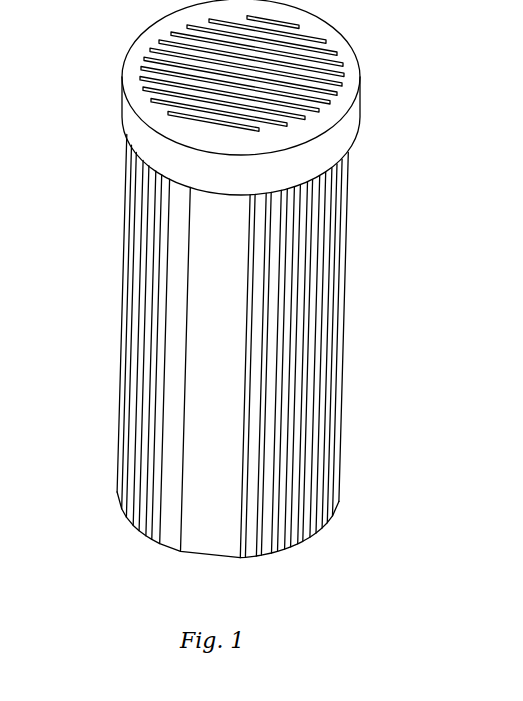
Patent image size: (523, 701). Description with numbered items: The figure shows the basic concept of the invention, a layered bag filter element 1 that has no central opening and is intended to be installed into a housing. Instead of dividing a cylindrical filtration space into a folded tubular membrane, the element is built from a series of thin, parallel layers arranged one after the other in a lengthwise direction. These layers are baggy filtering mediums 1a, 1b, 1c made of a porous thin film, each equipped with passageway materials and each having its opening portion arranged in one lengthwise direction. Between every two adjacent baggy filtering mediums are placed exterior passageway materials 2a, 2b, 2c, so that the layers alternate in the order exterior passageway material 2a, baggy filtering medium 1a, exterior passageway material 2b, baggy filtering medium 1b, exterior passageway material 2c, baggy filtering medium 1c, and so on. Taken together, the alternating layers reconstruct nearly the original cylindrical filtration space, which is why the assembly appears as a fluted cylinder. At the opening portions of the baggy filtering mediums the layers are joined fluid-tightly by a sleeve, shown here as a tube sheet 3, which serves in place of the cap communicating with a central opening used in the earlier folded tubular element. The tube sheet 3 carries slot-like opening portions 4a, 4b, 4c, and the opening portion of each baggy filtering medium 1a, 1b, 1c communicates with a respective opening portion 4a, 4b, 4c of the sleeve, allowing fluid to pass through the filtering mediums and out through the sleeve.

The layered bag filter element 1 is at (352, 337).
The baggy filtering medium 1a is at (258, 551).
The baggy filtering medium 1b is at (287, 538).
The baggy filtering medium 1c is at (305, 520).
The exterior passageway material 2a is at (202, 548).
The exterior passageway material 2b is at (153, 538).
The exterior passageway material 2c is at (138, 508).
The tube sheet 3 is at (338, 143).
The opening portion of the sleeve 4a is at (292, 26).
The opening portion of the sleeve 4b is at (320, 40).
The opening portion of the sleeve 4c is at (334, 54).